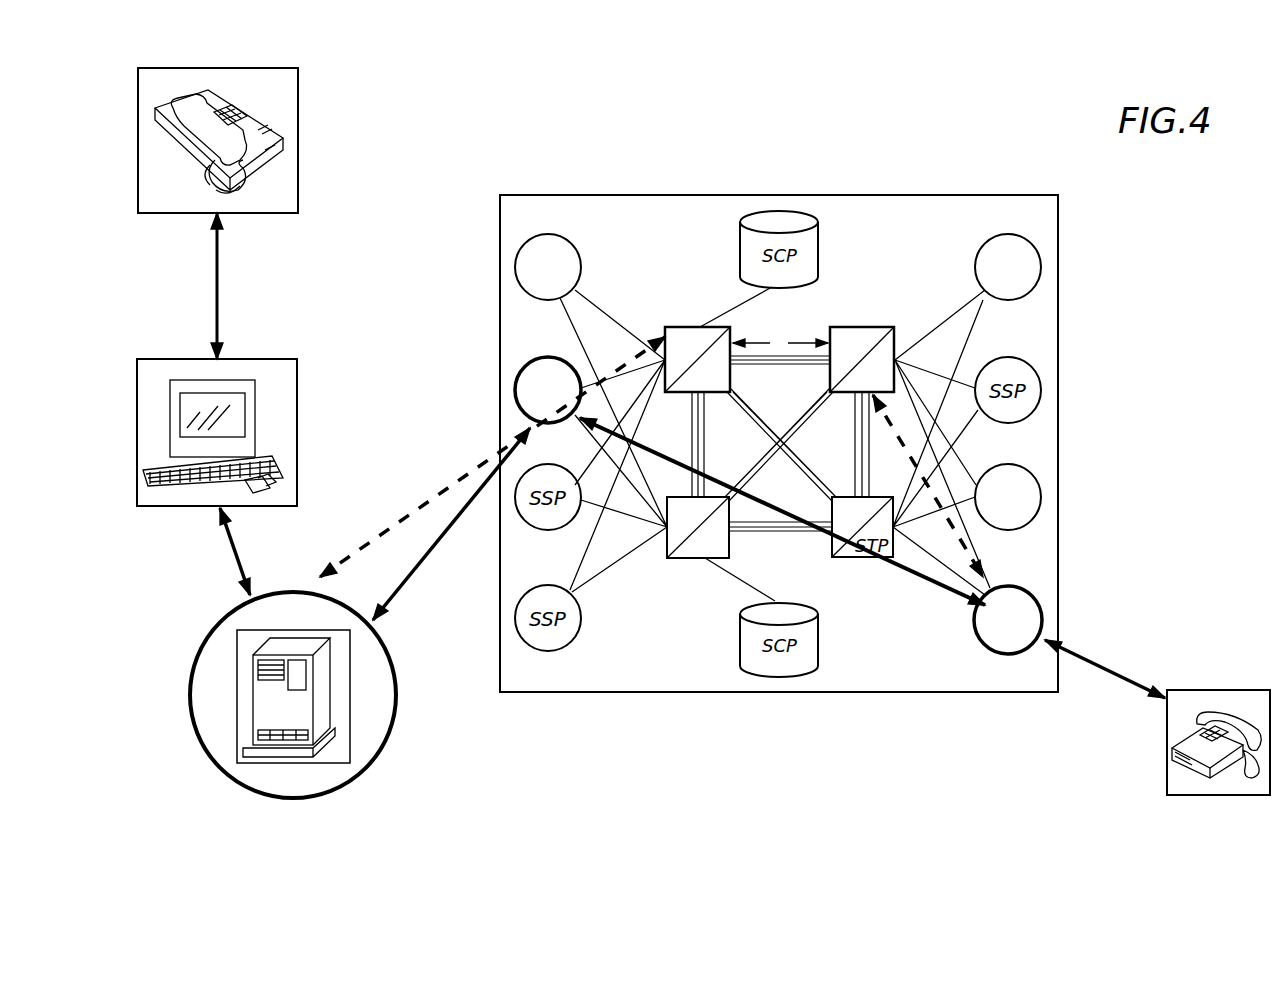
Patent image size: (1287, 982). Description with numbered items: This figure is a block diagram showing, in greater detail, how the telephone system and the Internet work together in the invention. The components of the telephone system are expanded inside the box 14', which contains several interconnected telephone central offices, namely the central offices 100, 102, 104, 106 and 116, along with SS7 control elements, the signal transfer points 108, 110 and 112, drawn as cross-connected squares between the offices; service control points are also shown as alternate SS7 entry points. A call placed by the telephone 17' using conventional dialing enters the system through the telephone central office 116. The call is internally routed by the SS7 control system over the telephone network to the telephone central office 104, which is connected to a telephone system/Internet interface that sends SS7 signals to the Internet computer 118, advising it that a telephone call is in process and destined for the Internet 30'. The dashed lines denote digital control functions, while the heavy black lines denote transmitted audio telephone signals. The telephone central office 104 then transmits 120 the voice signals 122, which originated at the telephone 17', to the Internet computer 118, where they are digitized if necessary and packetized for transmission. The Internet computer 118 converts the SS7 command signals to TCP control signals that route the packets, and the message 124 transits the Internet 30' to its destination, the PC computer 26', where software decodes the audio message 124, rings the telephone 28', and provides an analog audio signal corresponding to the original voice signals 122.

The telephone system box 14' is at (779, 411).
The telephone 17' is at (1218, 709).
The PC computer 26' is at (250, 405).
The telephone 28' is at (259, 140).
The Internet 30' is at (291, 695).
The telephone central office 100 is at (1045, 485).
The telephone central office 102 is at (540, 236).
The telephone central office 104 is at (550, 357).
The telephone central office 106 is at (937, 327).
The signal transfer point 108 is at (620, 562).
The signal transfer point 110 is at (858, 327).
The signal transfer point 112 is at (680, 327).
The telephone central office 116 is at (1048, 600).
The Internet computer 118 is at (335, 735).
The transmission of voice signals 120 is at (423, 557).
The voice signals 122 is at (1090, 660).
The message 124 is at (213, 572).